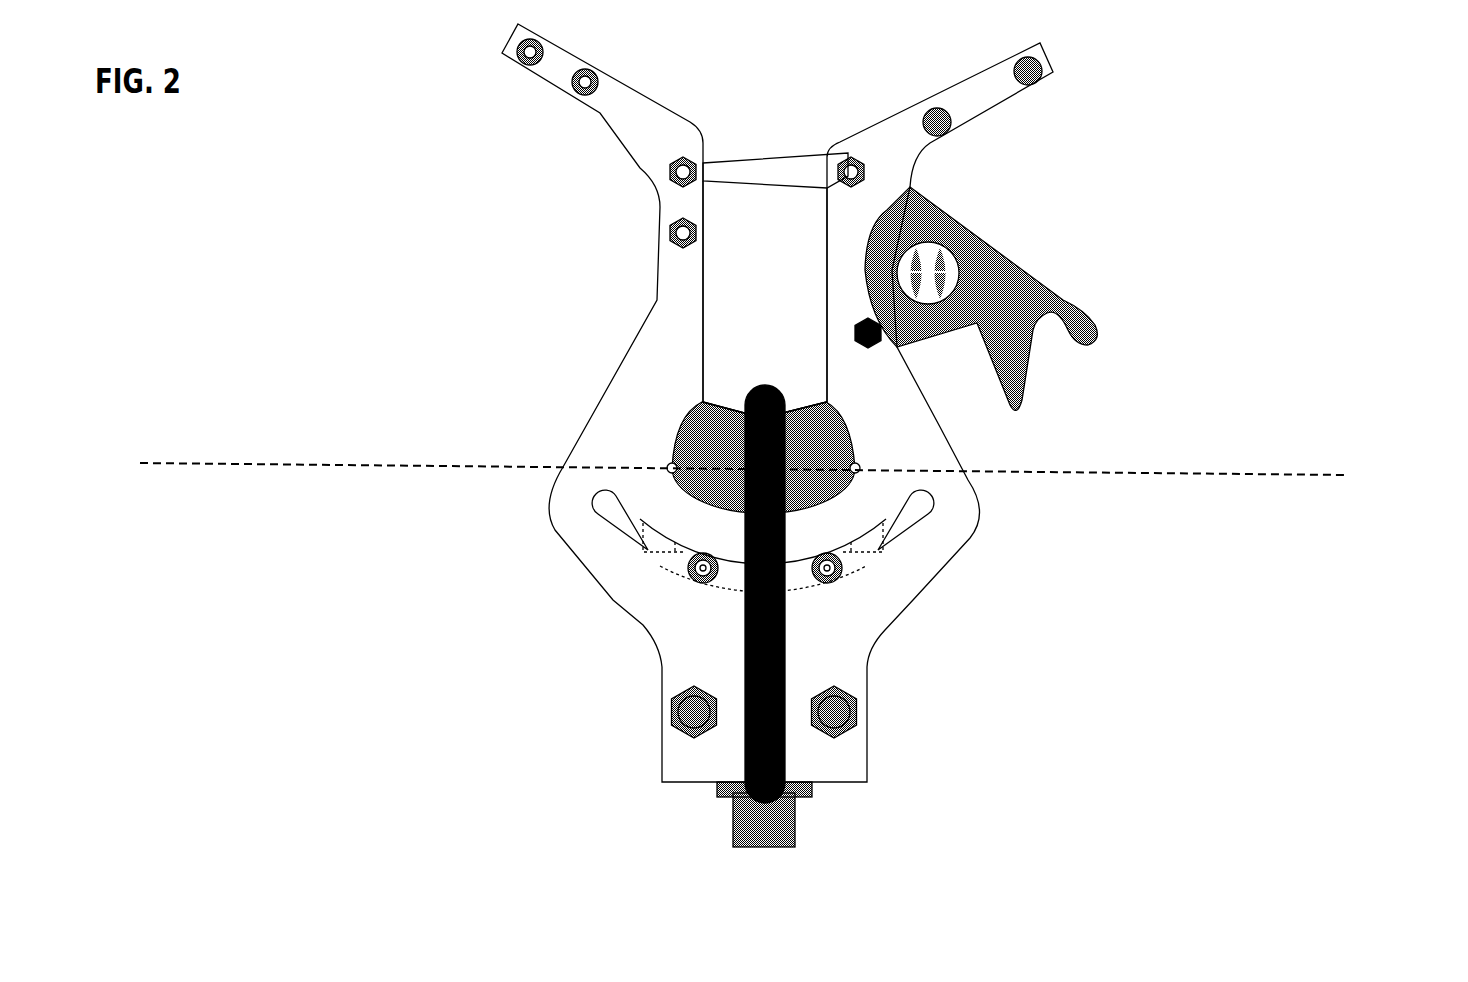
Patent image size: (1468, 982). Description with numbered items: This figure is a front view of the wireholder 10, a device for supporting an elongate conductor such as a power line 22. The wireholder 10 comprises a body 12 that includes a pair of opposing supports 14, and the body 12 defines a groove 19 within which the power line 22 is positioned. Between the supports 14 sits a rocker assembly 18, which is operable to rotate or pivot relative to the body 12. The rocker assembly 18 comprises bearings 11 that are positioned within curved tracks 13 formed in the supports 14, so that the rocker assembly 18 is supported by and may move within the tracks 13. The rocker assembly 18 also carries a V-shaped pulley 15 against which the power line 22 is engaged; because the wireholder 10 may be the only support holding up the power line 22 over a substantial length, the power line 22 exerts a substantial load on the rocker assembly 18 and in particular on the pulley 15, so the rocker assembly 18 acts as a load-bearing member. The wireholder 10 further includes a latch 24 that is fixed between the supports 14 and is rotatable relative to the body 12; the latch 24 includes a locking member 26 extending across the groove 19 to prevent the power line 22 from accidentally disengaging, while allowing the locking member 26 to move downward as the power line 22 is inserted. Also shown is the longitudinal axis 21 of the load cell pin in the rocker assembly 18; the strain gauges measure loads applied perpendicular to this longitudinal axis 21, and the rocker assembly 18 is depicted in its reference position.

The wireholder 10 is at (790, 435).
The bearings 11 is at (695, 567).
The body 12 is at (540, 494).
The curved tracks 13 is at (905, 526).
The supports 14 is at (680, 653).
The V-shaped pulley 15 is at (812, 478).
The rocker assembly 18 is at (712, 456).
The groove 19 is at (735, 324).
The longitudinal axis 21 is at (222, 460).
The power line 22 is at (762, 745).
The latch 24 is at (994, 290).
The locking member 26 is at (780, 173).